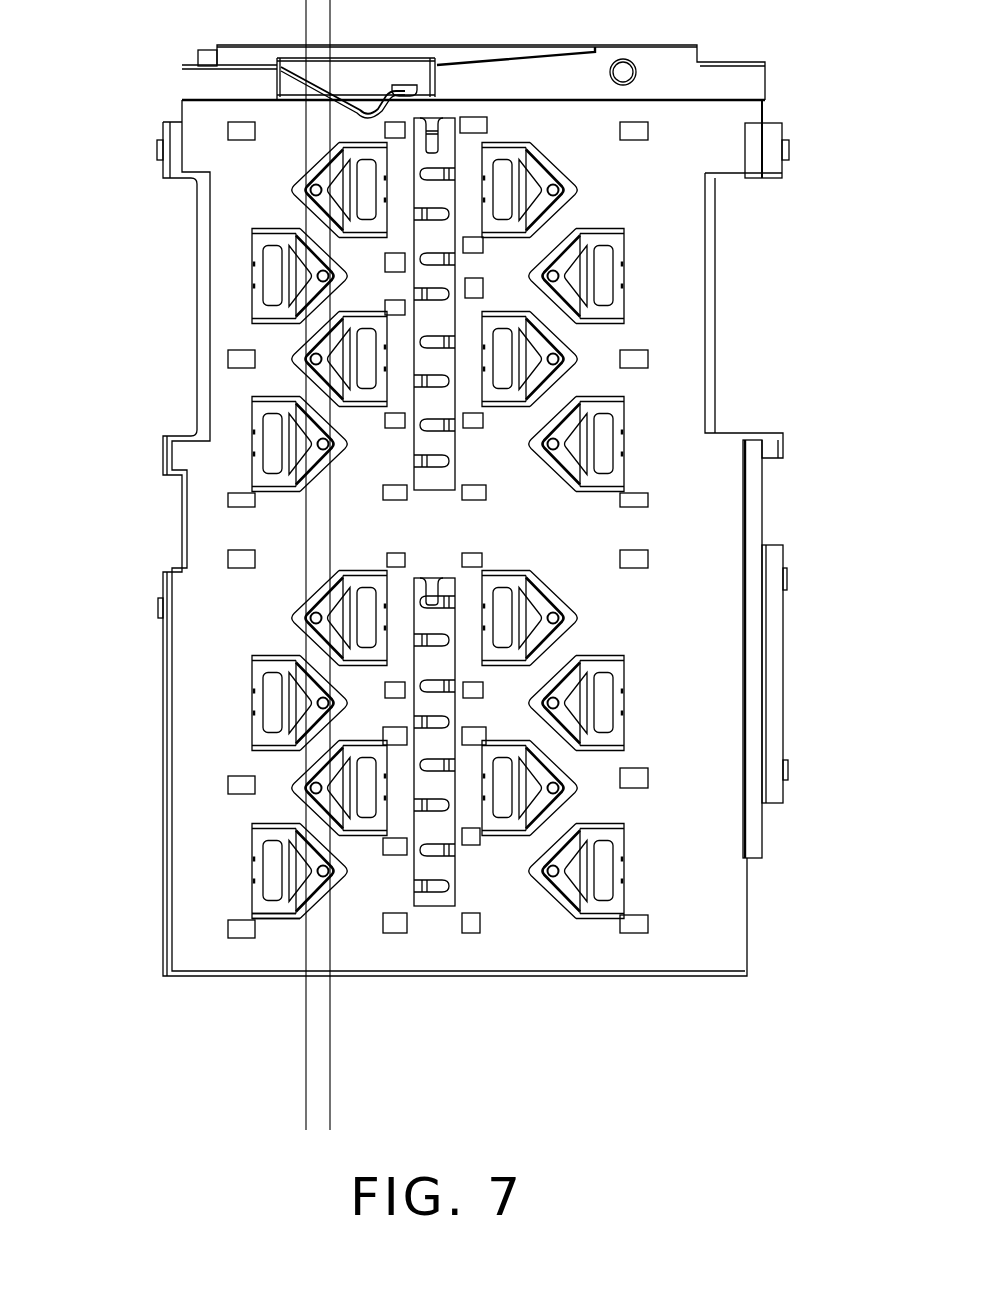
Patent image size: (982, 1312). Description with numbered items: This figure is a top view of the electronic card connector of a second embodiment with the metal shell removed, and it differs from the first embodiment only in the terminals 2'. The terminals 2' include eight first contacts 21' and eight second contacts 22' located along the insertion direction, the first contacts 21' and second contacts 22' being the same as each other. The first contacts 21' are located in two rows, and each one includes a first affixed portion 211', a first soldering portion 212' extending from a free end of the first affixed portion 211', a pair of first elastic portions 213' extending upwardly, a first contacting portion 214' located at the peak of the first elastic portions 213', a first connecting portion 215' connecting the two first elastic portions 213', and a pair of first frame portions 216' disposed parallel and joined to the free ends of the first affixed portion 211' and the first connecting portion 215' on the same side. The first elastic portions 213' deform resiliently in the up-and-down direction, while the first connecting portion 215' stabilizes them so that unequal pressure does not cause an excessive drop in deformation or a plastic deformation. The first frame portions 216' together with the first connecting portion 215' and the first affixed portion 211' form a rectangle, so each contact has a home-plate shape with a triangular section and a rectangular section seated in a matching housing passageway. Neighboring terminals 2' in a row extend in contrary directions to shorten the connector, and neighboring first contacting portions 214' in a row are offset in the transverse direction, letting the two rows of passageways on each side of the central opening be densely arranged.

The terminals 2' is at (686, 574).
The first contacts 21' is at (207, 669).
The second contacts 22' is at (217, 276).
The first affixed portion 211' is at (158, 875).
The first soldering portion 212' is at (256, 704).
The first elastic portions 213' is at (264, 957).
The first contacting portion 214' is at (370, 971).
The first connecting portion 215' is at (180, 840).
The first frame portions 216' is at (165, 952).